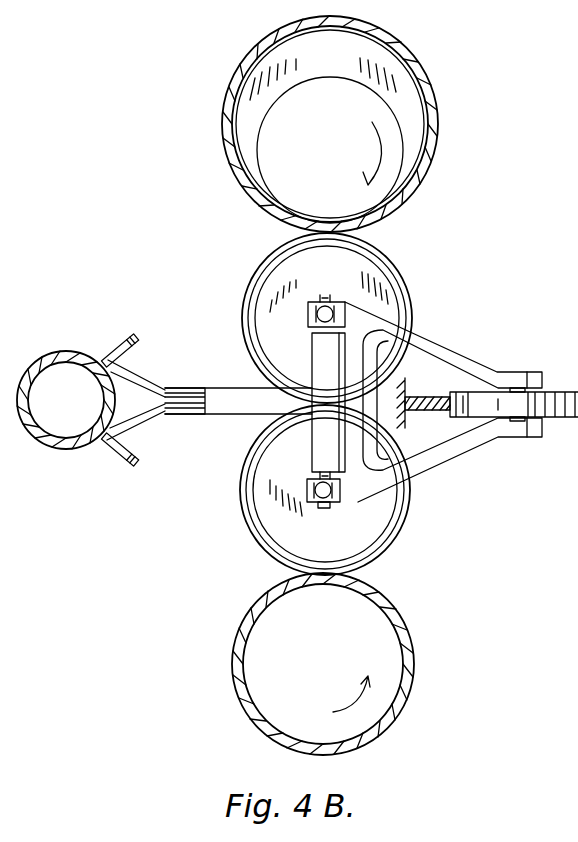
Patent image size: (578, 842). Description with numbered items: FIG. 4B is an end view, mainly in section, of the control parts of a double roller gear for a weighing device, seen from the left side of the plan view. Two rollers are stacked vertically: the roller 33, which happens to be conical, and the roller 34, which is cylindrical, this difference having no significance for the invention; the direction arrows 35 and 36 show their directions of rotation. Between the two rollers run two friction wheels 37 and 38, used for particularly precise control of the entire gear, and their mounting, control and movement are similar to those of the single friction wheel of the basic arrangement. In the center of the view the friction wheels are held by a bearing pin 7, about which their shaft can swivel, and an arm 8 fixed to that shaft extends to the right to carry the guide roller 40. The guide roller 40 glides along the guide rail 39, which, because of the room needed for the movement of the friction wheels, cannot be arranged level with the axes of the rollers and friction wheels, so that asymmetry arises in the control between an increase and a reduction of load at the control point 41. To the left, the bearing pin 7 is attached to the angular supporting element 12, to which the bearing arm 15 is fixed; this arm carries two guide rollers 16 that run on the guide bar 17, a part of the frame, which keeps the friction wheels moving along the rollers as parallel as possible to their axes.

The bearing pin 7 is at (327, 507).
The arm 8 is at (427, 463).
The angular supporting element 12 is at (228, 405).
The bearing arm 15 is at (190, 403).
The guide rollers 16 is at (142, 465).
The guide bar 17 is at (36, 430).
The roller 33 is at (225, 138).
The roller 34 is at (233, 687).
The direction arrow 35 is at (378, 152).
The direction arrow 36 is at (355, 697).
The friction wheel 37 is at (253, 273).
The friction wheel 38 is at (405, 523).
The guide rail 39 is at (427, 393).
The guide roller 40 is at (557, 418).
The control point 41 is at (517, 423).